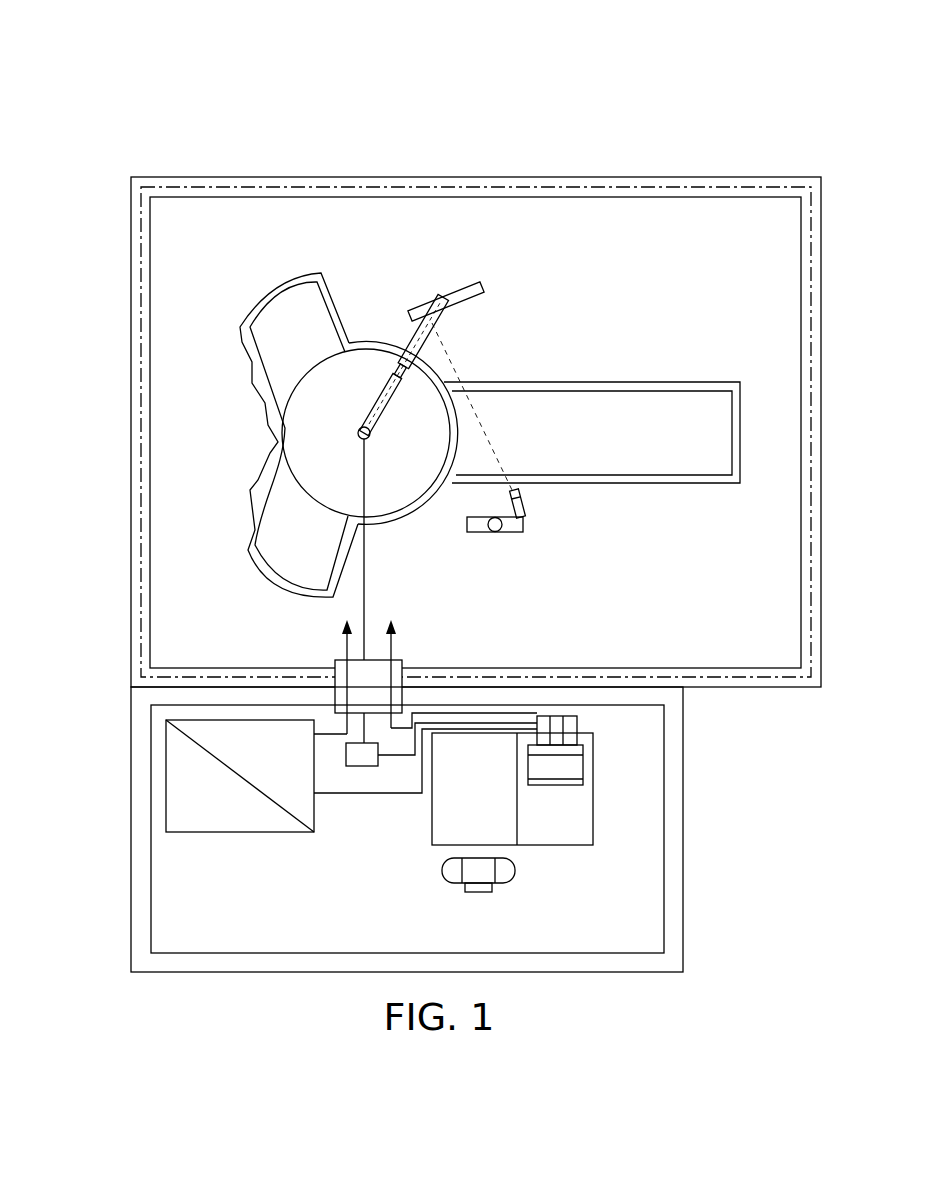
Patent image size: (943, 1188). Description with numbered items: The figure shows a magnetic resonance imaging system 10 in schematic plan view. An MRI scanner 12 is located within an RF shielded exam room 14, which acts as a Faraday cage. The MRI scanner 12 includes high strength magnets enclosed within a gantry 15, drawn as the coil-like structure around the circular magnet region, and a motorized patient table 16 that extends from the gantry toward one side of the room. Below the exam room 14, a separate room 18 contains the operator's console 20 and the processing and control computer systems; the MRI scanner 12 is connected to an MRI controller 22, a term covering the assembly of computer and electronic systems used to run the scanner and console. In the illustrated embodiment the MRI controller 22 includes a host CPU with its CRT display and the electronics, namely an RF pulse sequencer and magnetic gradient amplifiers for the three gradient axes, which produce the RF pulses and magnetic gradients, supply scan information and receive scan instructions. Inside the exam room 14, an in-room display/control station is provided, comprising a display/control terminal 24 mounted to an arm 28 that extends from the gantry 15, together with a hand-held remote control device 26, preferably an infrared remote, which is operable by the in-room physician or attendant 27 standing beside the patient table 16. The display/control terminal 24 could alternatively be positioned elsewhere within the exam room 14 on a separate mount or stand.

The magnetic resonance imaging system 10 is at (728, 124).
The MRI scanner 12 is at (355, 328).
The RF shielded exam room 14 is at (114, 320).
The gantry 15 is at (271, 303).
The motorized patient table 16 is at (570, 397).
The separate room 18 is at (114, 749).
The operator's console 20 is at (413, 834).
The MRI controller 22 is at (265, 830).
The display/control terminal 24 is at (471, 285).
The hand-held remote control device 26 is at (523, 497).
The in-room physician or attendant 27 is at (525, 530).
The arm 28 is at (406, 336).